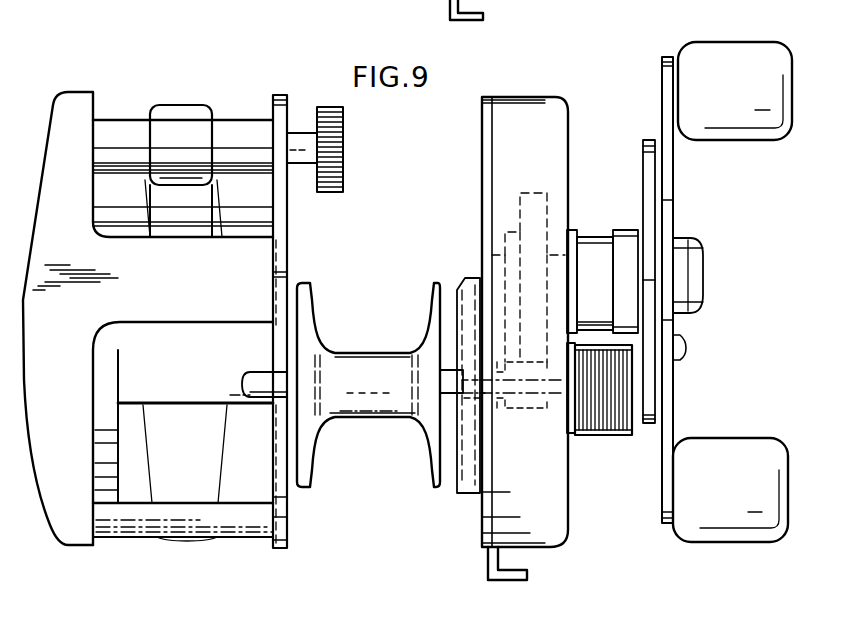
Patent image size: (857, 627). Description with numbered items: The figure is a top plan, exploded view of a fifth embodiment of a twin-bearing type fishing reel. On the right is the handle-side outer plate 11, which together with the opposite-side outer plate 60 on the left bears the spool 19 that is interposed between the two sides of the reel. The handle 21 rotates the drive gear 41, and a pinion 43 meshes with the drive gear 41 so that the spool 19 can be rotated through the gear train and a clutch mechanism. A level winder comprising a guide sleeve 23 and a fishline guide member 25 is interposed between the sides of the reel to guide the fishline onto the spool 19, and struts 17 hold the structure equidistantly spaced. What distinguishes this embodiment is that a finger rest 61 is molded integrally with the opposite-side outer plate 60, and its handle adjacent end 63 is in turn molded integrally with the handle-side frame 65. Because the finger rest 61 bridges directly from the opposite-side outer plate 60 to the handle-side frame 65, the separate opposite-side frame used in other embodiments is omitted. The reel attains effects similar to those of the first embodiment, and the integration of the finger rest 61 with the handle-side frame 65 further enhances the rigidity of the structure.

The handle-side outer plate 11 is at (533, 110).
The struts 17 is at (125, 560).
The spool 19 is at (368, 388).
The handle 21 is at (725, 40).
The guide sleeve 23 is at (115, 130).
The fishline guide member 25 is at (179, 112).
The drive gear 41 is at (547, 197).
The pinion 43 is at (540, 407).
The opposite-side outer plate 60 is at (60, 108).
The finger rest 61 is at (181, 322).
The handle adjacent end 63 is at (260, 268).
The handle-side frame 65 is at (275, 108).